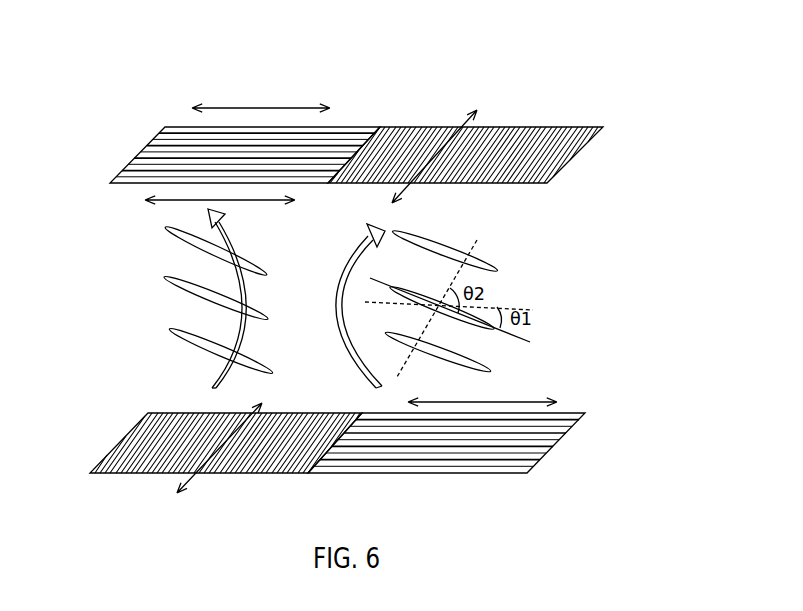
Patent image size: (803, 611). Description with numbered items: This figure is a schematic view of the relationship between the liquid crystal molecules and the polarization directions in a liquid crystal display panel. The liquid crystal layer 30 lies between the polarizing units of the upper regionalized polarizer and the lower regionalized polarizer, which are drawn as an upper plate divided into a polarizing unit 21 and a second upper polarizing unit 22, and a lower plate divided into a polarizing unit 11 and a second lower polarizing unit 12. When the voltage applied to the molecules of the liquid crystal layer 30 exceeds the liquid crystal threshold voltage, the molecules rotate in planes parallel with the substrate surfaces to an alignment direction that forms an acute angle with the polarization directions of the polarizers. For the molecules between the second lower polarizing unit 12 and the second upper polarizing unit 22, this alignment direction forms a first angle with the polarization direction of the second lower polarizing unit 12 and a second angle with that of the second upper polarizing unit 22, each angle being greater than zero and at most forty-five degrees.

The first polarizer 11 is at (168, 435).
The second lower polarizing unit 12 is at (568, 413).
The first compensation film 21 is at (340, 127).
The second upper polarizing unit 22 is at (533, 127).
The liquid crystal layer 30 is at (175, 312).